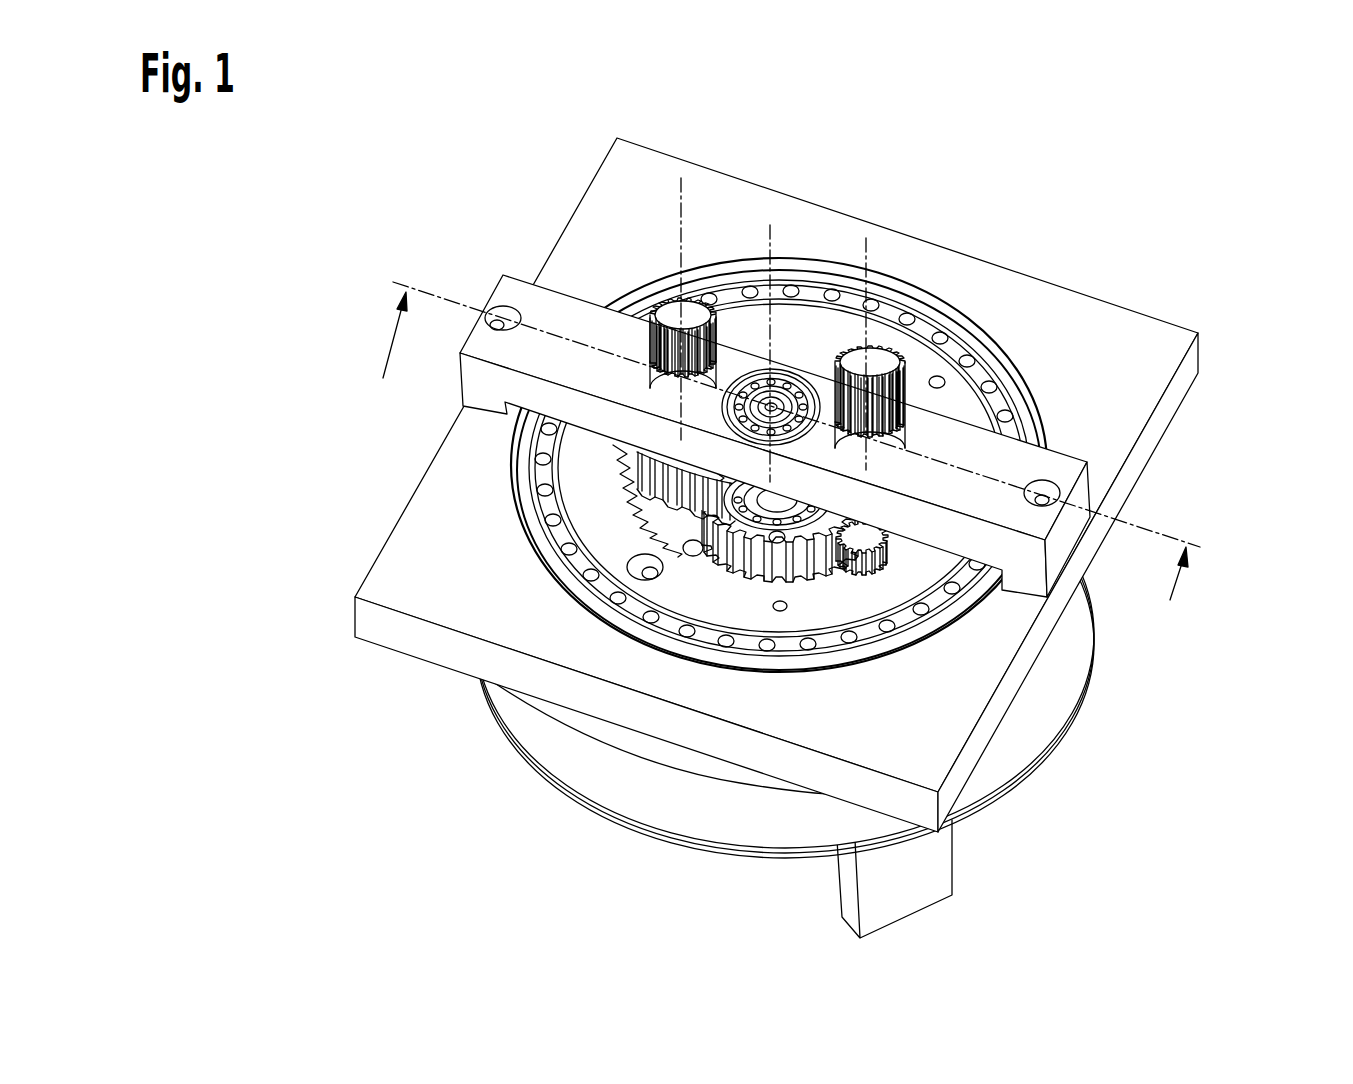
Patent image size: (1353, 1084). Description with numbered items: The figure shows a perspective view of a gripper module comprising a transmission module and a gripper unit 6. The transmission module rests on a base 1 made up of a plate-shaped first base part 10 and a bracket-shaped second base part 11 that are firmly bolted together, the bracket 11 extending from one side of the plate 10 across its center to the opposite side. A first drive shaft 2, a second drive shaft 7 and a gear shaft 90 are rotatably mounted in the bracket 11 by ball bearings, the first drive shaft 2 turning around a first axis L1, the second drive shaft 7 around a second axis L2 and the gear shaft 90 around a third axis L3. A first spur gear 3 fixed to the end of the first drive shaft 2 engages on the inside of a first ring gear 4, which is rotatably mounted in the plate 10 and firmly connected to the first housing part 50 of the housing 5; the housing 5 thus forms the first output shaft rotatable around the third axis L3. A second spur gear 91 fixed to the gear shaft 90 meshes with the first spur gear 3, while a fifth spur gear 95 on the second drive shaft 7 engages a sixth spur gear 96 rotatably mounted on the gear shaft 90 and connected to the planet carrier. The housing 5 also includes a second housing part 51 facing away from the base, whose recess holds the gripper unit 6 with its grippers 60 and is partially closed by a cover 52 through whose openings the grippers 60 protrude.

The base 1 is at (1098, 217).
The first drive shaft 2 is at (672, 306).
The first spur gear 3 is at (643, 473).
The first ring gear 4 is at (578, 497).
The housing 5 is at (466, 841).
The gripper unit 6 is at (1000, 897).
The second drive shaft 7 is at (885, 368).
The first base part 10 is at (1152, 332).
The second base part 11 is at (1055, 465).
The first housing part 50 is at (620, 742).
The second housing part 51 is at (607, 782).
The cover 52 is at (647, 823).
The gripper 60 is at (937, 860).
The gear shaft 90 is at (776, 404).
The second spur gear 91 is at (840, 570).
The fifth spur gear 95 is at (857, 567).
The sixth spur gear 96 is at (735, 537).
The first axis L1 is at (682, 208).
The second axis L2 is at (866, 252).
The third axis L3 is at (770, 240).